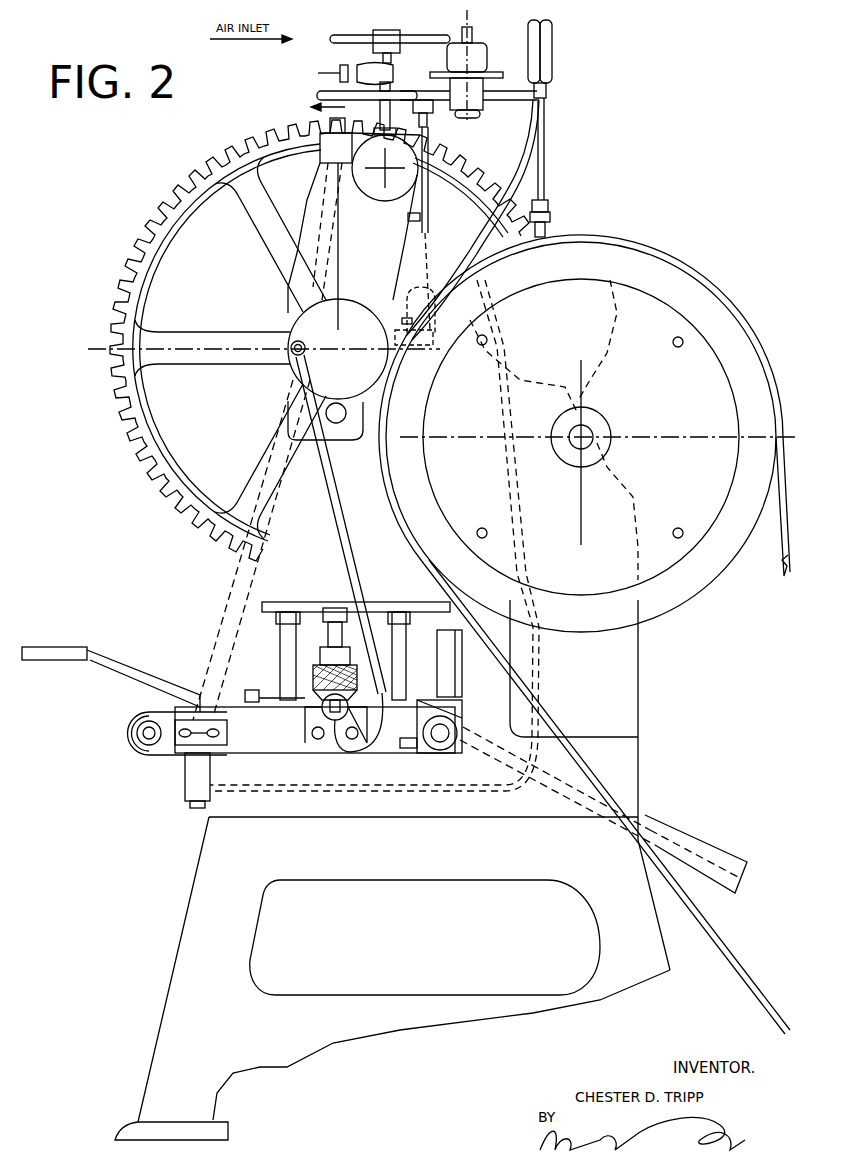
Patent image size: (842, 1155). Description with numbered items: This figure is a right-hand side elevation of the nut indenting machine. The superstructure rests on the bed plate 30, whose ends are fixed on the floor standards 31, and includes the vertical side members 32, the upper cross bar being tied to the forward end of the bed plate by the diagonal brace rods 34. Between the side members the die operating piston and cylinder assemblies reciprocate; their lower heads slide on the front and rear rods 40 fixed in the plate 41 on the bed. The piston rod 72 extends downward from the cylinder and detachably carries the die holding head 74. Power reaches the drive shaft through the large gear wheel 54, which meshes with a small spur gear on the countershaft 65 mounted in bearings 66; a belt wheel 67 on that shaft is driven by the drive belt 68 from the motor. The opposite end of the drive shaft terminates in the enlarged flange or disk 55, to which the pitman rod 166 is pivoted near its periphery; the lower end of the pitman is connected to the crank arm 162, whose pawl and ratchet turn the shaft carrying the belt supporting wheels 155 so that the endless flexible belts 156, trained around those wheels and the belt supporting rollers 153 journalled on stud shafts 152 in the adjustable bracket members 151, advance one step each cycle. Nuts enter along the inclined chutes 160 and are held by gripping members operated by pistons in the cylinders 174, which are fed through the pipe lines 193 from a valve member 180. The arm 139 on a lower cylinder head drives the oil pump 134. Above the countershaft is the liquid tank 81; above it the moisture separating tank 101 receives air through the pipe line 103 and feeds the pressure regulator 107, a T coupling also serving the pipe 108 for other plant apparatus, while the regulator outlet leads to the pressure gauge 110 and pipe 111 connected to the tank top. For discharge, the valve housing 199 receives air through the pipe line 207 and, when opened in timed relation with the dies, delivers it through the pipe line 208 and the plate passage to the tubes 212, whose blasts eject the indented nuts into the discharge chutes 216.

The bed plate 30 is at (516, 800).
The floor pedestals or standards 31 is at (392, 978).
The vertical side members 32 is at (620, 660).
The diagonal brace rods 34 is at (213, 618).
The front and rear rods 40 is at (273, 630).
The plate 41 is at (252, 743).
The large gear wheel 54 is at (128, 433).
The flange or disk 55 is at (353, 307).
The countershaft 65 is at (591, 430).
The bearings 66 is at (584, 417).
The belt wheel 67 is at (683, 587).
The drive belt 68 is at (593, 767).
The piston rod 72 is at (350, 620).
The die holding head 74 is at (317, 660).
The tank 81 is at (613, 328).
The moisture separating tank 101 is at (373, 188).
The pipe line 103 is at (358, 43).
The pressure regulator 107 is at (477, 87).
The pipe 108 is at (317, 94).
The pressure gauge 110 is at (548, 72).
The pipe 111 is at (543, 182).
The oil pump 134 is at (453, 663).
The arm 139 is at (428, 593).
The bracket member 151 is at (168, 786).
The stud shafts 152 is at (163, 737).
The belt supporting roller 153 is at (133, 733).
The belt supporting wheels 155 is at (450, 733).
The endless flexible belts 156 is at (153, 707).
The inclined chutes 160 is at (110, 660).
The crank arm 162 is at (413, 748).
The pitman rod 166 is at (343, 518).
The cylinders 174 is at (323, 710).
The valve member 180 is at (520, 183).
The pipe lines 193 is at (358, 750).
The valve housing 199 is at (412, 346).
The pipe line 207 is at (450, 157).
The pipe line 208 is at (503, 473).
The pipe or tube 212 is at (267, 693).
The discharge chutes 216 is at (690, 827).